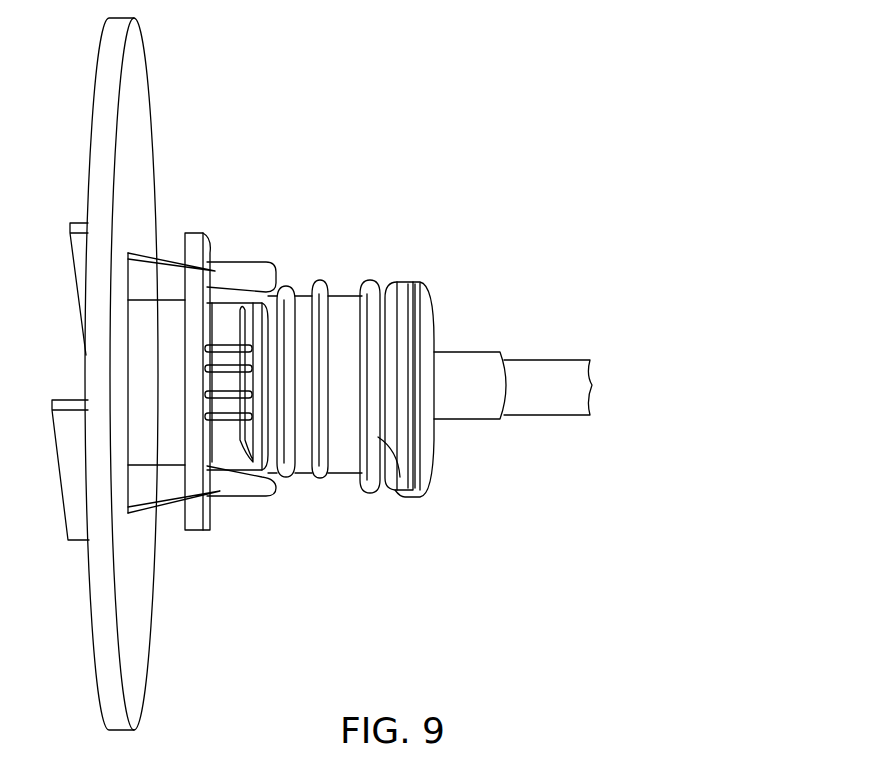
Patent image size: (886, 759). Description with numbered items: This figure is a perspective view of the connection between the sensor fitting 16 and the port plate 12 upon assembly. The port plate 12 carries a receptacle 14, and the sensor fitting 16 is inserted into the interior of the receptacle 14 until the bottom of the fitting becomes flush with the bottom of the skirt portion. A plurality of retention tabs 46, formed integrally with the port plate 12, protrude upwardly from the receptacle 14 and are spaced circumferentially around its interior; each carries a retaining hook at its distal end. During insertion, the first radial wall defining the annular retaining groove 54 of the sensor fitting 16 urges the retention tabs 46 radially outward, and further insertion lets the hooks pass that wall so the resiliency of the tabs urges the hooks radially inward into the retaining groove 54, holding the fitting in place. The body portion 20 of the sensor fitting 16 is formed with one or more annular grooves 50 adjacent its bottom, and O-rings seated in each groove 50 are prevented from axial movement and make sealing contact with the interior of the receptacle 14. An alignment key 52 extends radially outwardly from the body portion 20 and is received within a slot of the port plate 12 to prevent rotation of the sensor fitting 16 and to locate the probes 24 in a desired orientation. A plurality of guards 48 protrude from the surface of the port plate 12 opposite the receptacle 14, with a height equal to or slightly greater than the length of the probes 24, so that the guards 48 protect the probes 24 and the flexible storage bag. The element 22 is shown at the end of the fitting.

The port plate 12 is at (140, 161).
The receptacle 14 is at (150, 455).
The sensor fitting 16 is at (293, 473).
The body portion 20 is at (332, 473).
The rim 22 is at (405, 497).
The probes 24 is at (262, 452).
The retention tabs 46 is at (242, 277).
The guards 48 is at (78, 262).
The annular grooves 50 is at (273, 338).
The alignment key 52 is at (353, 307).
The retaining groove 54 is at (388, 317).